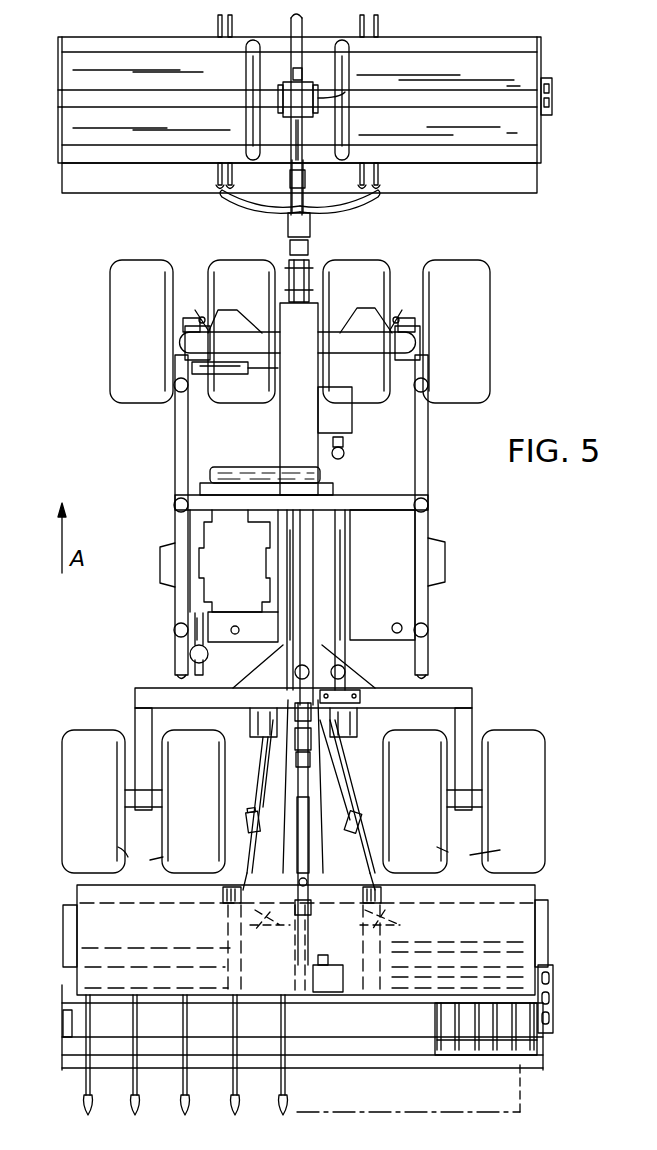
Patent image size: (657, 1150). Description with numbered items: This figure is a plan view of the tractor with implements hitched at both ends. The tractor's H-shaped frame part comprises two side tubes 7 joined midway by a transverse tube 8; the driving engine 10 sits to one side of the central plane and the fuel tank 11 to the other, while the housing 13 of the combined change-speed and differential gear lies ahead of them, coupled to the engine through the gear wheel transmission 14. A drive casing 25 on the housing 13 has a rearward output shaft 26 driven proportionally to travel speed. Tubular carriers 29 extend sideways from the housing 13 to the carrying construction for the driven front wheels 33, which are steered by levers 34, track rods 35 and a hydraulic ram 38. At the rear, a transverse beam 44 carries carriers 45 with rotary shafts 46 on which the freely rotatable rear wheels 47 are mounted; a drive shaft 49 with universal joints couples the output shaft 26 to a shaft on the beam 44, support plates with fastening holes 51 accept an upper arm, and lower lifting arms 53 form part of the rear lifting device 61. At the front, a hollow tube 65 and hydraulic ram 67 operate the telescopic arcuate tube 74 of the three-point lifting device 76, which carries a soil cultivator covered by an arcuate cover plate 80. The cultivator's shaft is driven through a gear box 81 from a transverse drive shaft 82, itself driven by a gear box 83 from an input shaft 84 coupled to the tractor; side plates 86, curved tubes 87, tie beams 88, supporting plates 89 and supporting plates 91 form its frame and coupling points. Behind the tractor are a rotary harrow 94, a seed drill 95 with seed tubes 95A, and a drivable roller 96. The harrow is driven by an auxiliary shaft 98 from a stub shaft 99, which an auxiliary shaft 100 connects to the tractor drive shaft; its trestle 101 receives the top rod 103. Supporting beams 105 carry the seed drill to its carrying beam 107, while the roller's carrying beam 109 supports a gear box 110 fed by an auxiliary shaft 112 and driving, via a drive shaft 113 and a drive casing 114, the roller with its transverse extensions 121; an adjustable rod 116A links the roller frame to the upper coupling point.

The tubes 7 is at (175, 473).
The tube 8 is at (375, 497).
The driving engine 10 is at (247, 560).
The fuel tank 11 is at (386, 566).
The housing for combined change speed and differential gear 13 is at (292, 412).
The gear wheel transmission 14 is at (248, 467).
The drive casing 25 is at (352, 422).
The output shaft 26 is at (345, 450).
The tubular carriers 29 is at (350, 353).
The front wheels 33 is at (220, 262).
The levers 34 is at (195, 318).
The track rods 35 is at (225, 310).
The hydraulic ram 38 is at (230, 380).
The beam 44 is at (465, 688).
The carriers 45 is at (135, 715).
The rotary shaft 46 is at (125, 797).
The rear wheels 47 is at (309, 865).
The drive shaft 49 is at (345, 595).
The fastening holes 51 is at (310, 800).
The lower lifting arms 53 is at (245, 848).
The rear lifting device 61 is at (372, 782).
The hollow tube 65 is at (288, 230).
The hydraulic ram 67 is at (312, 270).
The arcuate tube 74 is at (366, 212).
The three-point lifting device 76 is at (210, 228).
The arcuate cover plate 80 is at (85, 193).
The gear box 81 is at (552, 104).
The drive shaft 82 is at (448, 112).
The gear box 83 is at (318, 112).
The input shaft 84 is at (283, 100).
The side plates 86 is at (58, 62).
The curved tubes 87 is at (246, 72).
The tie beams 88 is at (318, 50).
The supporting plates 89 is at (291, 26).
The supporting plates 91 is at (216, 21).
The rotary harrow 94 is at (63, 915).
The seed drill 95 is at (538, 892).
The seed tubes 95A is at (188, 1084).
The drivable roller 96 is at (395, 1038).
The auxiliary shaft 98 is at (258, 820).
The stub shaft 99 is at (300, 692).
The auxiliary shaft 100 is at (287, 583).
The trestle 101 is at (375, 915).
The top rod 103 is at (298, 838).
The supporting beams 105 is at (228, 934).
The carrying beam 107 is at (130, 937).
The carrying beam 109 is at (143, 1003).
The gear box 110 is at (340, 997).
The auxiliary shaft 112 is at (348, 840).
The drive shaft 113 is at (420, 978).
The drive casing 114 is at (553, 993).
The rod 116A is at (300, 955).
The transverse extensions 121 is at (460, 1058).